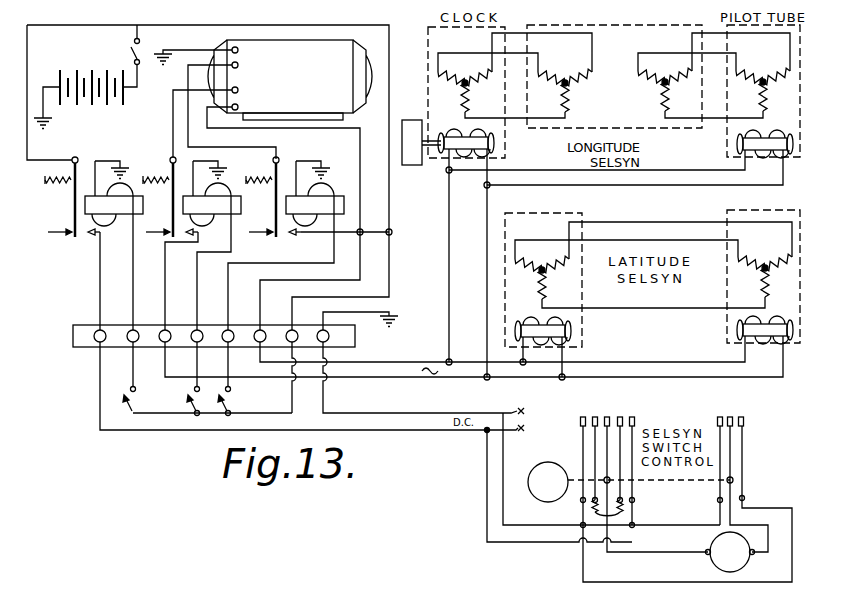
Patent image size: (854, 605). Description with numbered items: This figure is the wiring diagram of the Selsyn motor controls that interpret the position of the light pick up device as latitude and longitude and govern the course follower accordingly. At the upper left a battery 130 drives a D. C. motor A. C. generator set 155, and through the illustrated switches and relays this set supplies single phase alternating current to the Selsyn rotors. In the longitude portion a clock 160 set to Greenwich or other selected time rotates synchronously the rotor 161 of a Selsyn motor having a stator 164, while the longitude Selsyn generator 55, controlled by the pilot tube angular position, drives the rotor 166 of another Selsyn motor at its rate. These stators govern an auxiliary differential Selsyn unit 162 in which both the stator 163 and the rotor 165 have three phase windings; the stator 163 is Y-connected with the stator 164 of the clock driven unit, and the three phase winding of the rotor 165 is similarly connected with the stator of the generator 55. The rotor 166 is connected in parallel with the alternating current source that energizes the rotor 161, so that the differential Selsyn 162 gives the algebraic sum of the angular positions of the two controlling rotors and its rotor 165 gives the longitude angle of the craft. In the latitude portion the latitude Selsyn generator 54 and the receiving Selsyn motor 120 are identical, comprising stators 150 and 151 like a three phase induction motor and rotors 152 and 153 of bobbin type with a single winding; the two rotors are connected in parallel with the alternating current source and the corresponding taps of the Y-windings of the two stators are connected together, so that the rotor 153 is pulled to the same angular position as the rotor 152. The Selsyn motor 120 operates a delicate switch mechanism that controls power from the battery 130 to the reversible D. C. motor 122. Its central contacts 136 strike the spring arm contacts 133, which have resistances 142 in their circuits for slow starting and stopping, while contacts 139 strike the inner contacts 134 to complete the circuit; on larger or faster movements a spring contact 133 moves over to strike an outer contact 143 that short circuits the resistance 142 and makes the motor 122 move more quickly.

The battery 130 is at (83, 70).
The D. C. motor A. C. generator set 155 is at (290, 80).
The clock 160 is at (410, 120).
The rotor 161 is at (496, 143).
The differential Selsyn unit 162 is at (614, 69).
The stator 163 is at (570, 86).
The stator 164 is at (470, 86).
The rotor 165 is at (670, 85).
The longitude Selsyn generator 55 is at (764, 85).
The rotor 166 is at (737, 144).
The latitude Selsyn generator 54 is at (543, 280).
The stator 150 is at (548, 277).
The Selsyn motor 120 is at (664, 356).
The stator 151 is at (769, 275).
The rotor 152 is at (573, 331).
The rotor 153 is at (737, 330).
The spring arm contacts 133 is at (593, 416).
The central contacts 136 is at (606, 416).
The outer contact 143 is at (581, 418).
The contacts 139 is at (730, 416).
The contacts 134 is at (718, 419).
The resistances 142 is at (615, 511).
The reversible D. C. motor 122 is at (730, 552).